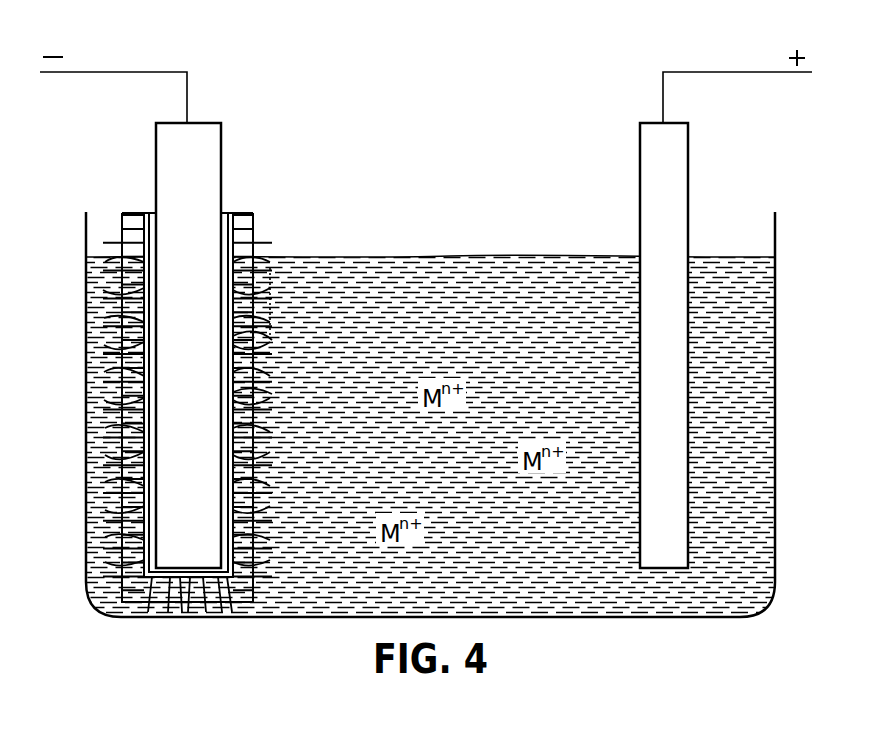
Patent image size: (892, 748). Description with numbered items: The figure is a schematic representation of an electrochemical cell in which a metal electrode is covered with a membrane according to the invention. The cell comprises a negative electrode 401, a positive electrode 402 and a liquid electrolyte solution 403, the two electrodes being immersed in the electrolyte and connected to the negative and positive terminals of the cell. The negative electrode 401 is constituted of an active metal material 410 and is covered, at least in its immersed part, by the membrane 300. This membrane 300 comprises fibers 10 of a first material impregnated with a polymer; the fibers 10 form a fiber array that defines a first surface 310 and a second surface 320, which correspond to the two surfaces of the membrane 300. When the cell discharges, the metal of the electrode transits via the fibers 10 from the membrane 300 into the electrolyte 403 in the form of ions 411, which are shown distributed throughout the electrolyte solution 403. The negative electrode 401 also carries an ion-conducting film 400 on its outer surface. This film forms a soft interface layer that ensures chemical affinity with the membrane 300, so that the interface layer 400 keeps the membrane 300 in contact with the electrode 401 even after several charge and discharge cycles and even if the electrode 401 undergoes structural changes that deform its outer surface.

The ion-conducting film 400 is at (150, 215).
The negative electrode 401 is at (200, 151).
The positive electrode 402 is at (664, 152).
The liquid electrolyte solution 403 is at (441, 322).
The ions 411 is at (464, 400).
The active metal material 410 is at (185, 550).
The membrane 300 is at (258, 218).
The second surface 320 is at (272, 292).
The first surface 310 is at (257, 337).
The fibers 10 is at (248, 392).